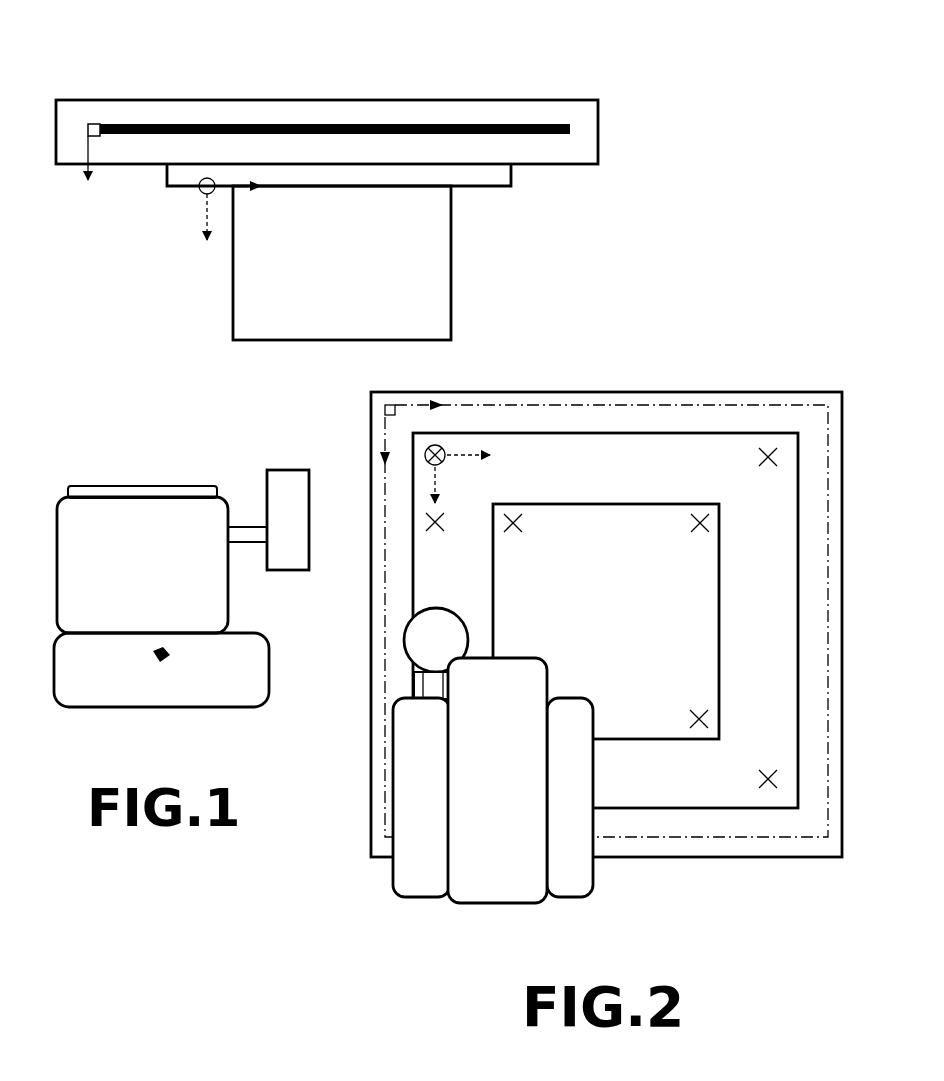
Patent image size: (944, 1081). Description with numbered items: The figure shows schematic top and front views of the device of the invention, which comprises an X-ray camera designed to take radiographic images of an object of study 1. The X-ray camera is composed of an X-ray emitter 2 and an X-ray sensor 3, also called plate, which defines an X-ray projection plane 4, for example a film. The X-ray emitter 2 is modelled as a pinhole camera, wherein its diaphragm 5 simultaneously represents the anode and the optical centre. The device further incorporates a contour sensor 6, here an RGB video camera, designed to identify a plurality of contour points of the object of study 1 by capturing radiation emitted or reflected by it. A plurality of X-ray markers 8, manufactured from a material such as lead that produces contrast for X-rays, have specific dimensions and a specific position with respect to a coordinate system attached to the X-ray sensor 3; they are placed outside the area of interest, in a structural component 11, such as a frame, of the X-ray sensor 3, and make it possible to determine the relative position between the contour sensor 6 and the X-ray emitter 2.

In FIG. 1, the object of study 1 is at (430, 270).
In FIG. 2, the object of study 1 is at (675, 622).
In FIG. 1, the X-ray emitter 2 is at (125, 688).
In FIG. 2, the X-ray emitter 2 is at (464, 783).
In FIG. 1, the X-ray sensor 3 is at (439, 90).
In FIG. 2, the X-ray sensor 3 is at (604, 373).
In FIG. 1, the X-ray projection plane 4 is at (553, 127).
In FIG. 2, the X-ray projection plane 4 is at (697, 405).
In FIG. 1, the diaphragm 5 is at (165, 662).
In FIG. 1, the contour sensor 6 is at (279, 480).
In FIG. 2, the contour sensor 6 is at (425, 632).
In FIG. 2, the X-ray markers 8 is at (425, 522).
In FIG. 1, the structural component 11 is at (513, 112).
In FIG. 2, the structural component 11 is at (768, 392).